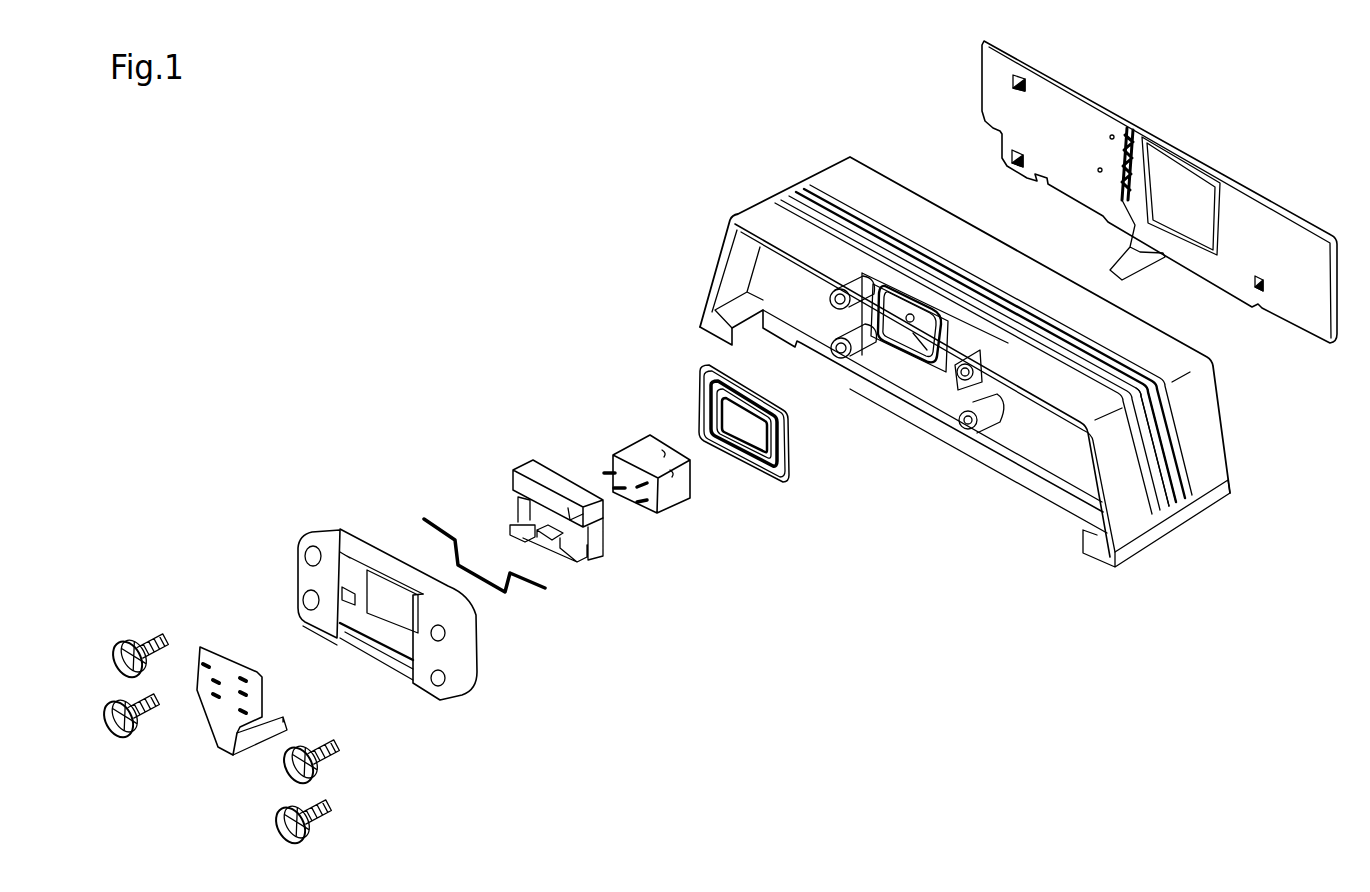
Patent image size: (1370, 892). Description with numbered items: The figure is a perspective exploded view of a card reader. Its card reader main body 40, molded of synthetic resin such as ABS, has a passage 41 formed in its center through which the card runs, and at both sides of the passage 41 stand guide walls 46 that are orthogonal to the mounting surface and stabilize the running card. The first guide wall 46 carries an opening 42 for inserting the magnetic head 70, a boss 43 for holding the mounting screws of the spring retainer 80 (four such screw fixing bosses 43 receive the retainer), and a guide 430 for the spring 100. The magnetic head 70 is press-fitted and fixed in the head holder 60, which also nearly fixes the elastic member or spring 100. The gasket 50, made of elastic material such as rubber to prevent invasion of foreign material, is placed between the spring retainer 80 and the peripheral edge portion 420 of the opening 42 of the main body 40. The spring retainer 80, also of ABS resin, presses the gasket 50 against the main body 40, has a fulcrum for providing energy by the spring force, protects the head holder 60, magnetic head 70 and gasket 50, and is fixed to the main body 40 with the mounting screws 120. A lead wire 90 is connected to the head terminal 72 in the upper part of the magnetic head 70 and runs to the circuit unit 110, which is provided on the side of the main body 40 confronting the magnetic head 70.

The card reader main body 40 is at (1217, 473).
The passage 41 is at (1173, 503).
The opening 42 is at (915, 338).
The boss 43 is at (965, 372).
The guide wall 46 is at (1080, 543).
The gasket 50 is at (782, 488).
The head holder 60 is at (595, 547).
The magnetic head 70 is at (673, 492).
The head terminal 72 is at (622, 490).
The spring retainer 80 is at (465, 658).
The lead wire 90 is at (228, 663).
The elastic member (spring) 100 is at (527, 582).
The circuit unit 110 is at (1283, 303).
The mounting screws 120 is at (345, 748).
The peripheral edge portion 420 is at (883, 353).
The guide 430 is at (863, 352).